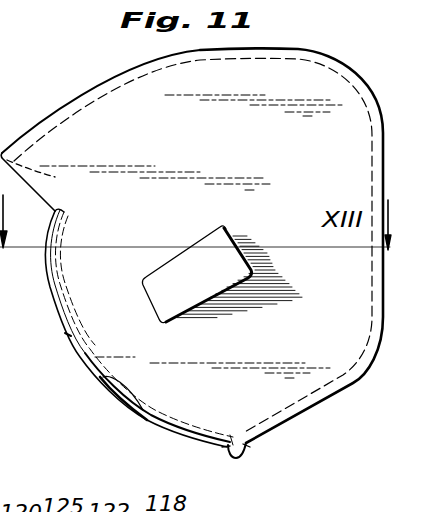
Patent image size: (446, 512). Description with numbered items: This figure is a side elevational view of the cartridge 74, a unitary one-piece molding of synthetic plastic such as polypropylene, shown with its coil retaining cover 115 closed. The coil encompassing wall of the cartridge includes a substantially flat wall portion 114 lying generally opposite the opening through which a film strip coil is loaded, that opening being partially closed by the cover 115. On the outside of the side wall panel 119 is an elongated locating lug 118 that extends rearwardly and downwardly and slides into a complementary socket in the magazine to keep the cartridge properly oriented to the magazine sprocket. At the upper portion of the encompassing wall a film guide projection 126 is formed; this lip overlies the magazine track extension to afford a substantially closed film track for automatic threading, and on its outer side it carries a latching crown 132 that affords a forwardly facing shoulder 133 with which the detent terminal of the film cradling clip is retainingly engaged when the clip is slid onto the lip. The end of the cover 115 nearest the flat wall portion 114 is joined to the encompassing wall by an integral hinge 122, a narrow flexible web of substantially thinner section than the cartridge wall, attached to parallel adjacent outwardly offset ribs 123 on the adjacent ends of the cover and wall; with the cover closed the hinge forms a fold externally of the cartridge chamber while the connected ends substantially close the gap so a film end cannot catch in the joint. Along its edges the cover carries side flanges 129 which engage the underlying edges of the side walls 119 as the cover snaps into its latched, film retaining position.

The cartridge 74 is at (353, 385).
The forwardly facing shoulder 133 is at (101, 95).
The latching crown 132 is at (33, 125).
The flat wall portion 114 is at (382, 181).
The film guide projection 126 is at (50, 180).
The side wall panel 119 is at (282, 155).
The side flange 129 is at (45, 268).
The coil retaining cover 115 is at (104, 397).
The locating lug 118 is at (193, 296).
The integral hinge 122 is at (236, 460).
The outwardly offset rib 123 is at (266, 450).